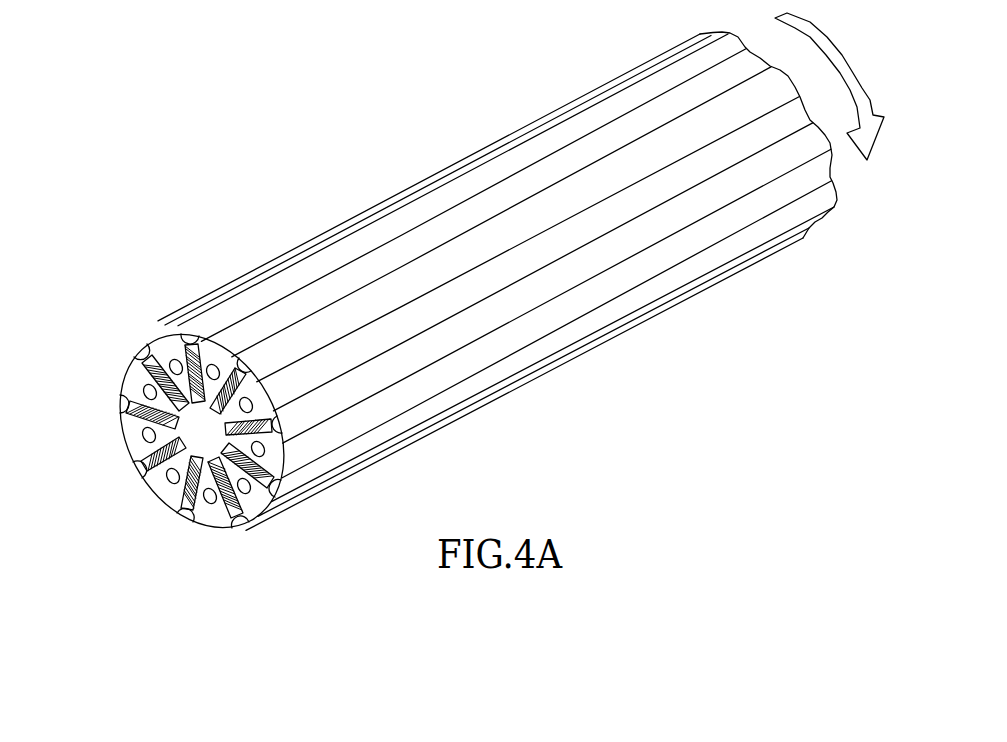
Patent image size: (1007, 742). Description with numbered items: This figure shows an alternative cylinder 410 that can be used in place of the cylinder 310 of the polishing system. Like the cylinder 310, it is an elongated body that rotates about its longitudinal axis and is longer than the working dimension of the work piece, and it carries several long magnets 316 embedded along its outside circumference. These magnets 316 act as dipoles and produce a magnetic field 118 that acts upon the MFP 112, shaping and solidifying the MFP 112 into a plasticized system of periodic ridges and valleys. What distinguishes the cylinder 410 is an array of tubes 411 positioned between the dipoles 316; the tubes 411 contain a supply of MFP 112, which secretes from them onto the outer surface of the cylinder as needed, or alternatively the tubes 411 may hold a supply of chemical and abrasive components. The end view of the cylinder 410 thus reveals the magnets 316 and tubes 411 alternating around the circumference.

The cylinder 410 is at (497, 281).
The magnetic field 118 is at (210, 340).
The MFP 112 is at (130, 342).
The magnets 316 is at (140, 383).
The cylinder 310 is at (140, 443).
The tubes 411 is at (178, 470).